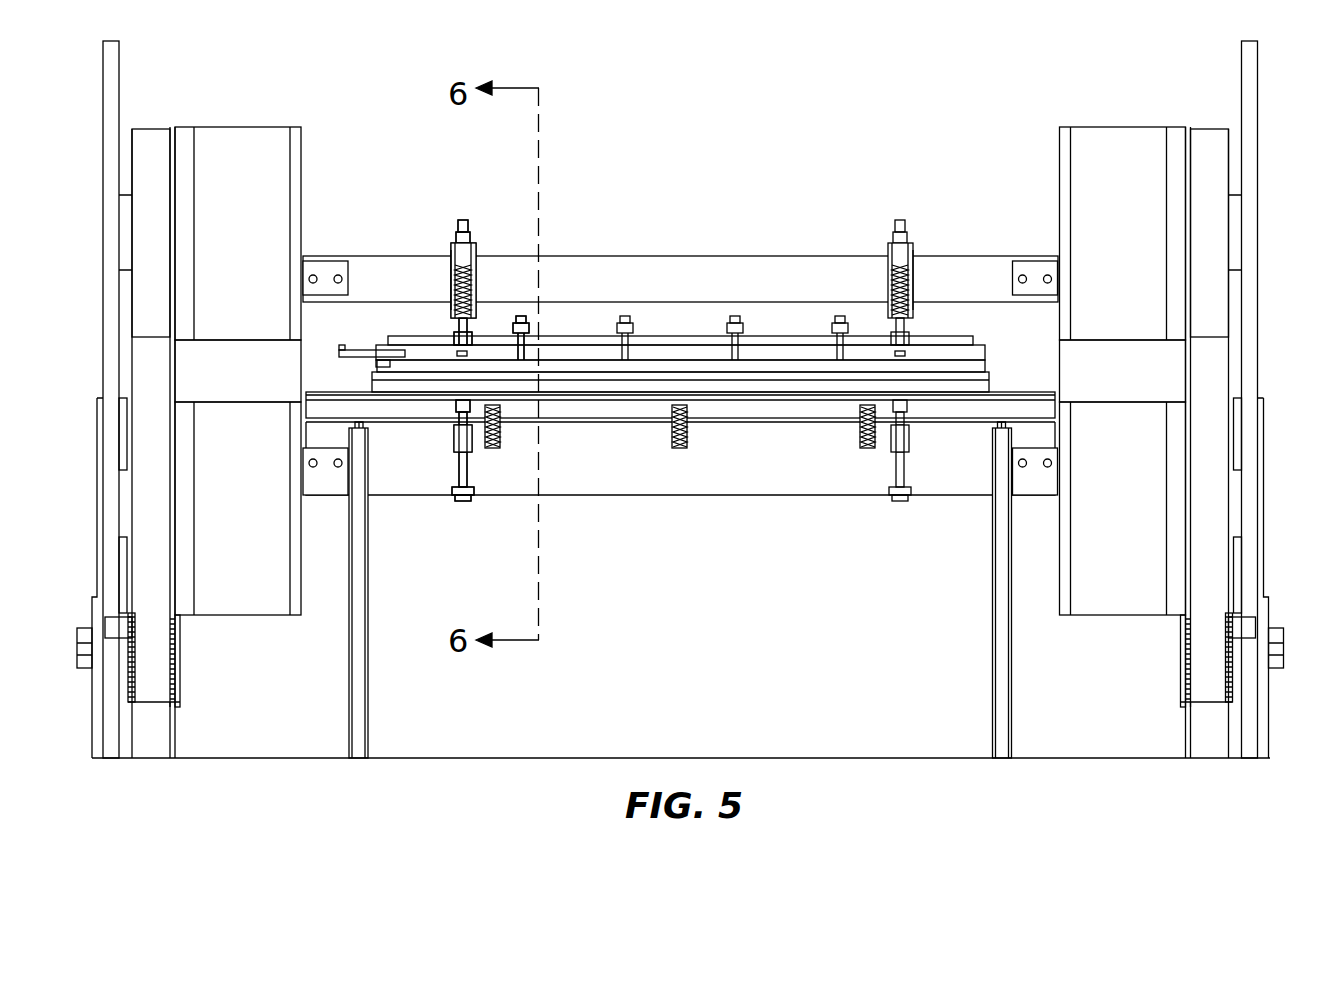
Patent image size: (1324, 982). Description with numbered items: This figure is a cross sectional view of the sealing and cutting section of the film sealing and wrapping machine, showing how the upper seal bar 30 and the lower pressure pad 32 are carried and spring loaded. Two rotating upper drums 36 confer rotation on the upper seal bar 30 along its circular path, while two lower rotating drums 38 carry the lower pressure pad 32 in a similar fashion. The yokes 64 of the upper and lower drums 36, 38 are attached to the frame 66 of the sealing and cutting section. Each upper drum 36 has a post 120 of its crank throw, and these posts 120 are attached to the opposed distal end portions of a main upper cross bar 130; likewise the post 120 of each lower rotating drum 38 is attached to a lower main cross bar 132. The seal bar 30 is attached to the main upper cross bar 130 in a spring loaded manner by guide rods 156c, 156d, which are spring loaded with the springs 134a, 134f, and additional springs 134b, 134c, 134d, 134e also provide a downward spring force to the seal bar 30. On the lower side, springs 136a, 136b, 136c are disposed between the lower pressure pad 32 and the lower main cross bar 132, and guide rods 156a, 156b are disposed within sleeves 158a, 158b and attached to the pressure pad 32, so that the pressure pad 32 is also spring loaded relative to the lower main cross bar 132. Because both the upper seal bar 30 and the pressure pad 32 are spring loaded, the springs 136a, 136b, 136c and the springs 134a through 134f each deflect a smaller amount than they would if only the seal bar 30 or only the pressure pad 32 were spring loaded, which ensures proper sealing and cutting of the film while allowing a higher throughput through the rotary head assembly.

The upper seal bar 30 is at (997, 347).
The lower pressure pad 32 is at (1004, 375).
The upper drum 36 is at (243, 113).
The lower rotating drum 38 is at (240, 622).
The yoke 64 is at (125, 232).
The frame 66 is at (113, 358).
The post 120 is at (327, 272).
The main upper cross bar 130 is at (490, 256).
The lower main cross bar 132 is at (603, 497).
The spring 134a is at (450, 283).
The spring 134b is at (530, 328).
The spring 134c is at (634, 328).
The spring 134d is at (743, 328).
The spring 134e is at (847, 328).
The spring 134f is at (912, 290).
The spring 136a is at (493, 452).
The spring 136b is at (681, 452).
The spring 136c is at (869, 452).
The guide rod 156a is at (457, 472).
The guide rod 156b is at (908, 470).
The guide rod 156c is at (470, 233).
The guide rod 156d is at (905, 222).
The sleeve 158a is at (455, 438).
The sleeve 158b is at (908, 437).